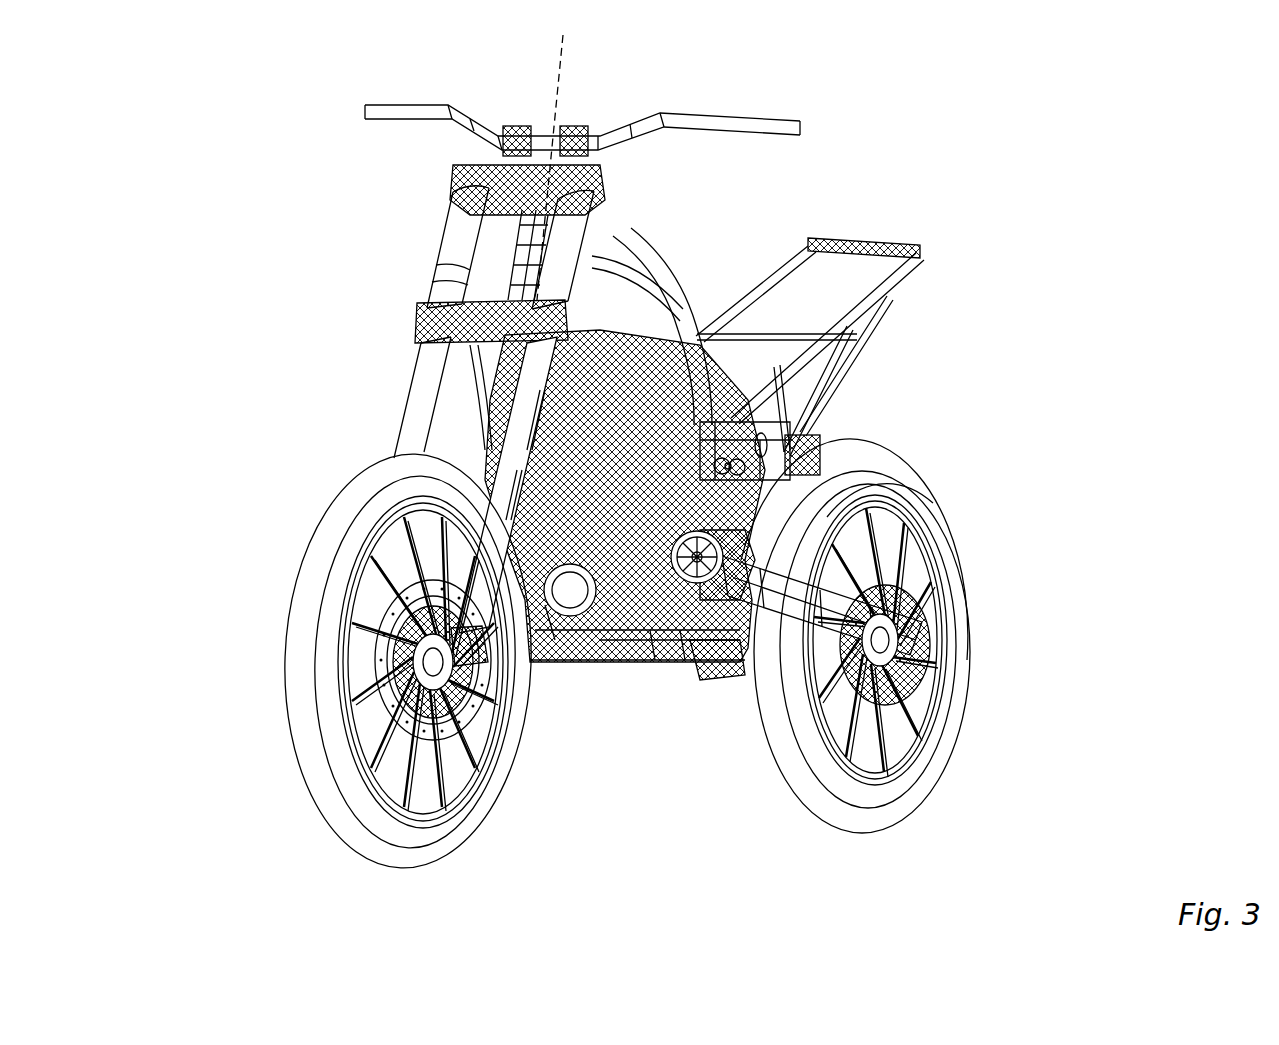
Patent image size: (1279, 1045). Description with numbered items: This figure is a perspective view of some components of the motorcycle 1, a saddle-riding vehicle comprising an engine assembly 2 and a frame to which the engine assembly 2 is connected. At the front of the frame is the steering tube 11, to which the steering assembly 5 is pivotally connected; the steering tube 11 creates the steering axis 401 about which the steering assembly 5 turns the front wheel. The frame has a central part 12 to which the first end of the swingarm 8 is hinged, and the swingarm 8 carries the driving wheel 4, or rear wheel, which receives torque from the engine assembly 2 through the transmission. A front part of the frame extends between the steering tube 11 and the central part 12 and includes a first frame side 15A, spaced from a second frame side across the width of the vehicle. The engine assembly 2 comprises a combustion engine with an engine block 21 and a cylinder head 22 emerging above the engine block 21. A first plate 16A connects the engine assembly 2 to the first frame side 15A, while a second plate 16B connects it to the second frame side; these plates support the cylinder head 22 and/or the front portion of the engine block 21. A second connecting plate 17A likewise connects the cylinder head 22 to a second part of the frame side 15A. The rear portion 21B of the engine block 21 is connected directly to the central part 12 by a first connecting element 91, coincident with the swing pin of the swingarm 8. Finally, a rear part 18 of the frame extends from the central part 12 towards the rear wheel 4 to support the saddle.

The motorcycle 1 is at (134, 306).
The engine assembly 2 is at (559, 688).
The driving wheel 4 is at (937, 527).
The steering assembly 5 is at (392, 292).
The swingarm 8 is at (940, 567).
The steering tube 11 is at (477, 250).
The central part 12 is at (735, 518).
The first frame side 15A is at (688, 300).
The first plate 16A is at (628, 290).
The second plate 16B is at (455, 384).
The second connecting plate 17A is at (692, 298).
The rear part 18 is at (845, 270).
The engine block 21 is at (637, 680).
The rear portion 21B is at (672, 665).
The cylinder head 22 is at (457, 430).
The first connecting element 91 is at (713, 682).
The steering axis 401 is at (542, 102).